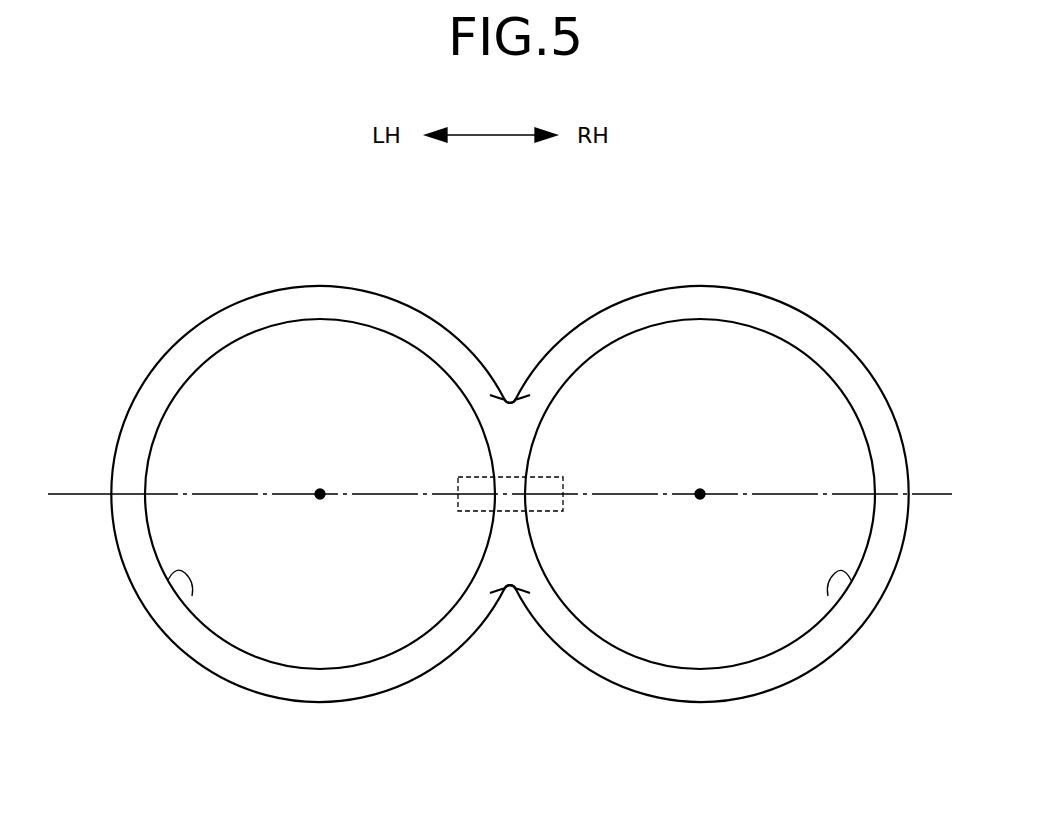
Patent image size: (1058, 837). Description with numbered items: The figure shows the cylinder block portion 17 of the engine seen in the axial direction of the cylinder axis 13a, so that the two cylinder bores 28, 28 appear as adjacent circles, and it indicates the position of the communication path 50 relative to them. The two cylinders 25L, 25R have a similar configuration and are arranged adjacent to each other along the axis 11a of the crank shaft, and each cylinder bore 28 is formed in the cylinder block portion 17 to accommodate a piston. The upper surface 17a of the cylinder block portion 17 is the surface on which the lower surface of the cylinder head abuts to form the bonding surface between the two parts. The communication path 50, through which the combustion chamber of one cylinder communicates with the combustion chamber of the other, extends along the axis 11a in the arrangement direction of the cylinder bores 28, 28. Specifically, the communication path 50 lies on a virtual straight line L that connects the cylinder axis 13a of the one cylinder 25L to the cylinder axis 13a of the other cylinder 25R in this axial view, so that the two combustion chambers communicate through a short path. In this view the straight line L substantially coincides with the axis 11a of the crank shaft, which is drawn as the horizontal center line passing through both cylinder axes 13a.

The cylinder block portion 17 is at (142, 386).
The upper surface 17a is at (505, 432).
The cylinder 25L is at (226, 302).
The cylinder 25R is at (806, 308).
The axis 11a is at (78, 496).
The virtual straight line L is at (415, 496).
The cylinder axis 13a is at (316, 499).
The cylinder bore 28 is at (192, 596).
The communication path 50 is at (513, 511).